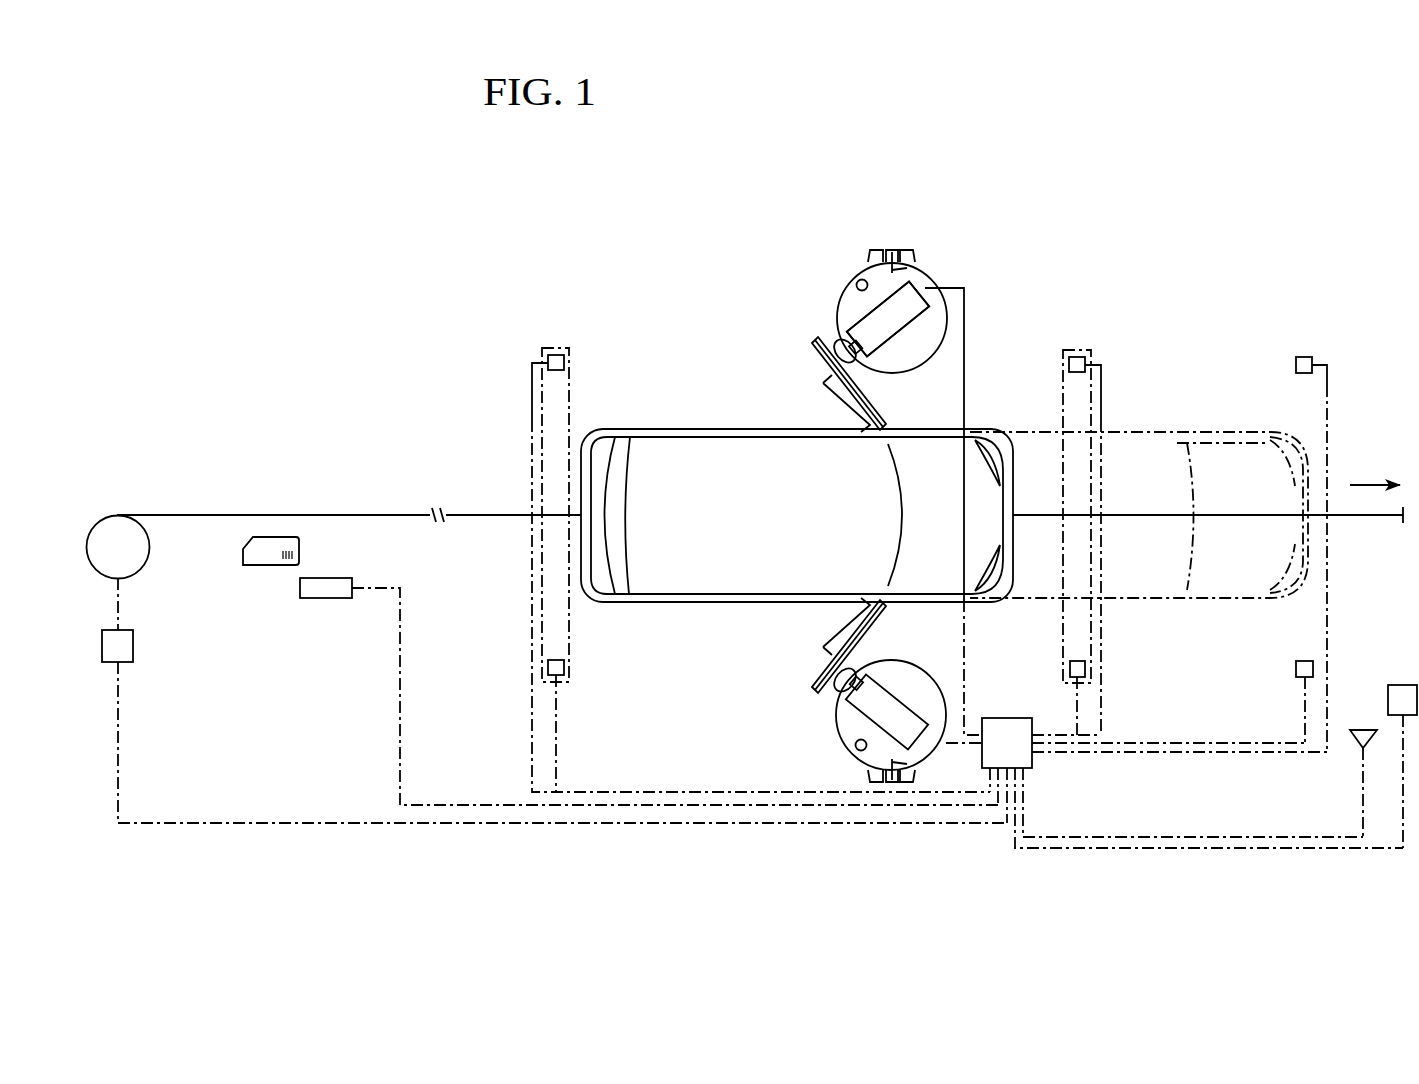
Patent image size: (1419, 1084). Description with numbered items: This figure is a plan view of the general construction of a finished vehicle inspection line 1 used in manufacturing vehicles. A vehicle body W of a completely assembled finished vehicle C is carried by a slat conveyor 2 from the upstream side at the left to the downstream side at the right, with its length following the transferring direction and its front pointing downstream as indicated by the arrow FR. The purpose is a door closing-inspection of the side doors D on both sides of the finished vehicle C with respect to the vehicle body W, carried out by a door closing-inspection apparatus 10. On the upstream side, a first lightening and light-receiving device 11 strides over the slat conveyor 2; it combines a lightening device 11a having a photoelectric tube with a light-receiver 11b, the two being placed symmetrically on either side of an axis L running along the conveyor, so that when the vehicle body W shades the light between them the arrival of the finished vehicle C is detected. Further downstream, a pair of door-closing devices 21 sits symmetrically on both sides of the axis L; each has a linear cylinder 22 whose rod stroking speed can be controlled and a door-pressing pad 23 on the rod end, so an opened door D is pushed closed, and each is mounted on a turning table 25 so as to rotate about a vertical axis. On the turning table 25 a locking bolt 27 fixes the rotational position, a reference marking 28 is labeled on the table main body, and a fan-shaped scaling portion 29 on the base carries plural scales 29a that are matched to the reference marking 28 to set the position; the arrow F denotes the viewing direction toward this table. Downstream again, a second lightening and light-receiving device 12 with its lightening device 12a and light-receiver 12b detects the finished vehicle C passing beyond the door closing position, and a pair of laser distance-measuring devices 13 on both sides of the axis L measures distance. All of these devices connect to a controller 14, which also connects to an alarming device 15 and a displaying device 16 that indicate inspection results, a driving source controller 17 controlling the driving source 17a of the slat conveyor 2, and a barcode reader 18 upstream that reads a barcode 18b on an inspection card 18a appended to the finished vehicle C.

The finished vehicle inspection line 1 is at (375, 403).
The slat conveyor 2 is at (330, 512).
The door closing-inspection apparatus 10 is at (688, 312).
The first lightening and light-receiving device 11 is at (540, 385).
The lightening device 11a is at (556, 355).
The light-receiver 11b is at (564, 668).
The second lightening and light-receiving device 12 is at (1058, 412).
The lightening device 12a is at (1077, 357).
The light-receiver 12b is at (1085, 668).
The laser distance-measuring device 13 is at (1305, 357).
The controller 14 is at (1010, 760).
The alarming device 15 is at (1363, 730).
The displaying device 16 is at (1403, 685).
The driving source controller 17 is at (133, 645).
The driving source 17a is at (130, 556).
The barcode reader 18 is at (331, 590).
The inspection card 18a is at (253, 557).
The barcode 18b is at (289, 561).
The door-closing device 21 is at (888, 318).
The linear cylinder 22 is at (857, 305).
The door-pressing pad 23 is at (835, 342).
The turning table 25 is at (930, 272).
The locking bolt 27 is at (861, 280).
The reference marking 28 is at (907, 268).
The scaling portion 29 is at (878, 250).
The scales 29a is at (907, 252).
The finished vehicle C is at (664, 425).
The vehicle body W is at (715, 452).
The door D is at (878, 407).
The axis L is at (385, 512).
The arrow F is at (782, 835).
The vehicle front direction FR is at (1376, 466).